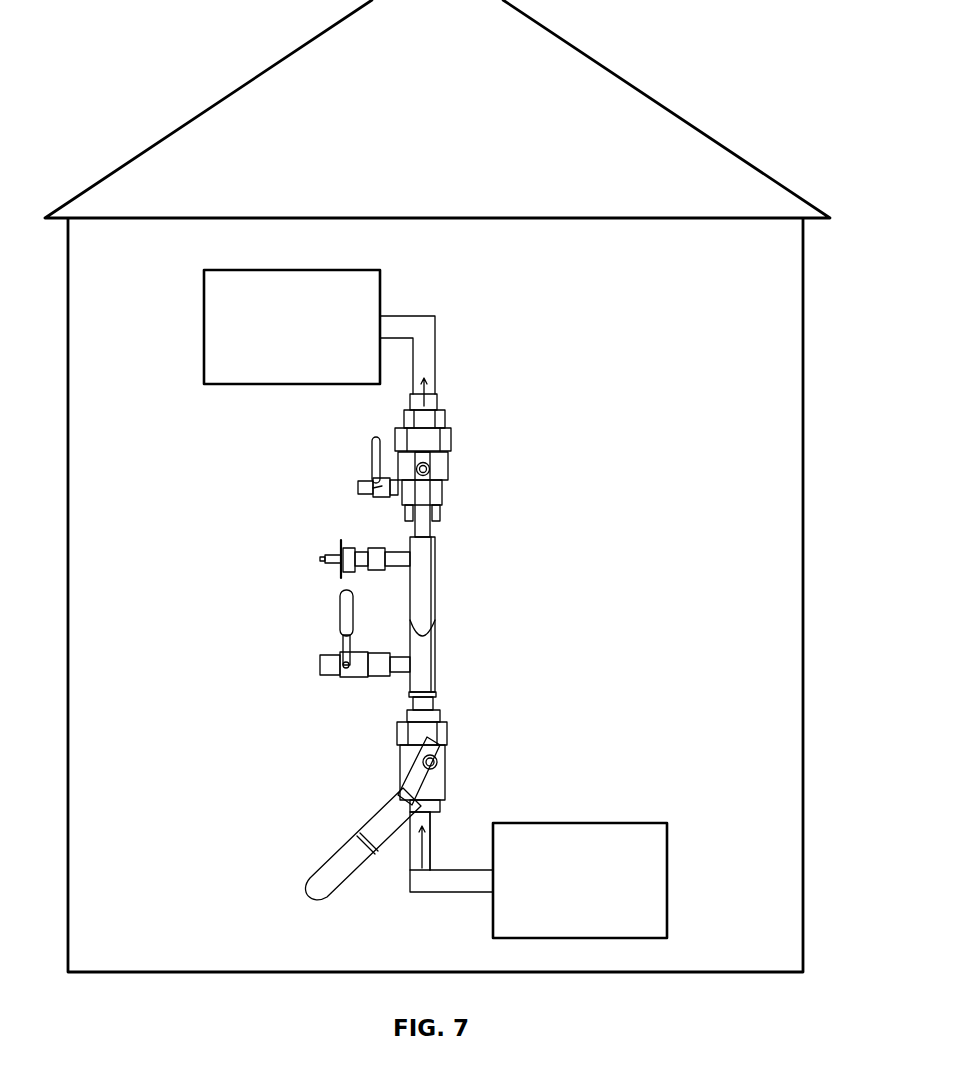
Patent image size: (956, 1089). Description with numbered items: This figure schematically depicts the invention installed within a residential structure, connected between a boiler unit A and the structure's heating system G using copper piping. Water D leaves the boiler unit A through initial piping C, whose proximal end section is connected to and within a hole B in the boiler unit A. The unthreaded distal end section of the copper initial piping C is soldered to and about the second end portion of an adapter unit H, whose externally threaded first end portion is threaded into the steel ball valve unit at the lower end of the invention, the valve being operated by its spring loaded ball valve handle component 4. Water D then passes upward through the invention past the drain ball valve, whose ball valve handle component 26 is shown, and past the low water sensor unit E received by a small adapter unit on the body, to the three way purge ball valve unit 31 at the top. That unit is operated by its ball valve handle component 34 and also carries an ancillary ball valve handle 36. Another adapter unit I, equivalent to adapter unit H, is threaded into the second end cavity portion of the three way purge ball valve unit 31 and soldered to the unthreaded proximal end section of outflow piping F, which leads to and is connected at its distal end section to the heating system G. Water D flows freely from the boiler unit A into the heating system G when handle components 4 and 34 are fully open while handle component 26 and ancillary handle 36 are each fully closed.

The heating system G is at (232, 372).
The boiler unit A is at (541, 832).
The outflow piping F is at (437, 370).
The water D is at (417, 404).
The adapter unit I is at (436, 413).
The three way purge ball valve unit 31 is at (452, 462).
The ancillary ball valve handle 36 is at (366, 450).
The low water sensor unit E is at (345, 540).
The ball valve handle component 34 is at (423, 620).
The ball valve handle component 26 is at (340, 605).
The spring loaded ball valve handle component 4 is at (326, 882).
The adapter unit H is at (430, 823).
The initial piping C is at (450, 882).
The hole B is at (490, 895).